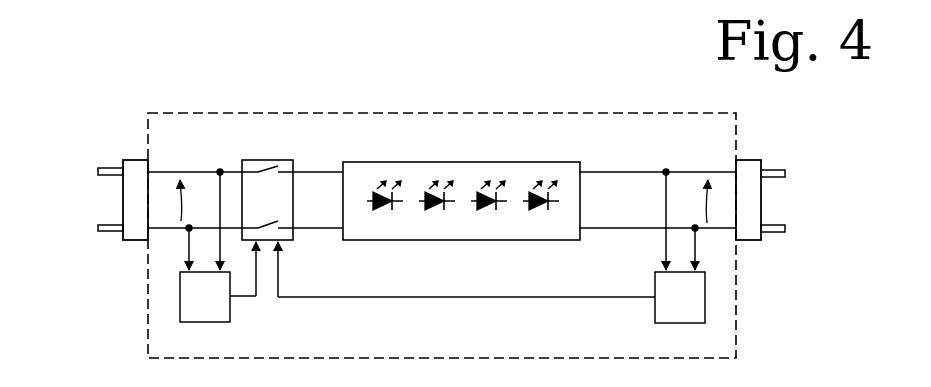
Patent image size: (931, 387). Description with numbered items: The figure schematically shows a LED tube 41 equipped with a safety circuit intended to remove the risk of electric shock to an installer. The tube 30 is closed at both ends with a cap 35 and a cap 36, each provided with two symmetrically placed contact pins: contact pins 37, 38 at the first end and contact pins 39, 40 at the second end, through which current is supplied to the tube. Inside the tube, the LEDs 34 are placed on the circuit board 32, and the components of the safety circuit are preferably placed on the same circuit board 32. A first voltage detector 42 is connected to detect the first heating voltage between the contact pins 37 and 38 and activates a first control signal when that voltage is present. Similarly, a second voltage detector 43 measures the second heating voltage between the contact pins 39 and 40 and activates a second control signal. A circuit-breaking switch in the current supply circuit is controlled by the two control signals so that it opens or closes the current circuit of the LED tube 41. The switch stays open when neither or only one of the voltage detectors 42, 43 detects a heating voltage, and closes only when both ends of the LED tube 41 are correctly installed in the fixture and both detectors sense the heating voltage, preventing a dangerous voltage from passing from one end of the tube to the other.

The tube 30 is at (538, 113).
The circuit board 32 is at (472, 220).
The LEDs 34 is at (388, 208).
The cap 35 is at (138, 160).
The cap 36 is at (752, 160).
The contact pin 37 is at (112, 168).
The contact pin 38 is at (110, 233).
The contact pin 39 is at (785, 172).
The contact pin 40 is at (785, 232).
The LED tube 41 is at (474, 97).
The voltage detector 42 is at (230, 322).
The voltage detector 43 is at (655, 323).